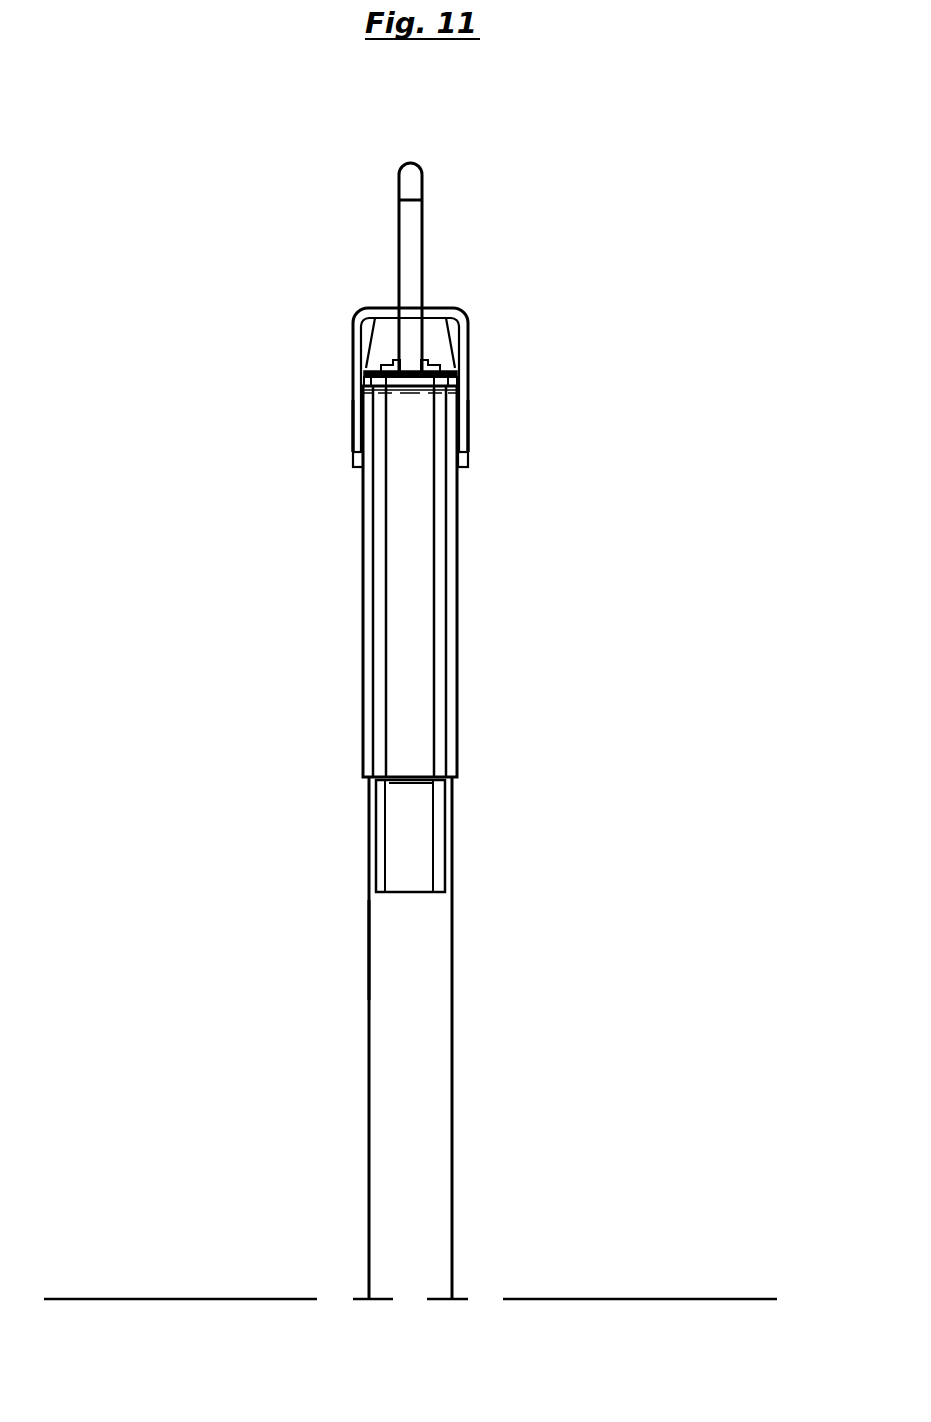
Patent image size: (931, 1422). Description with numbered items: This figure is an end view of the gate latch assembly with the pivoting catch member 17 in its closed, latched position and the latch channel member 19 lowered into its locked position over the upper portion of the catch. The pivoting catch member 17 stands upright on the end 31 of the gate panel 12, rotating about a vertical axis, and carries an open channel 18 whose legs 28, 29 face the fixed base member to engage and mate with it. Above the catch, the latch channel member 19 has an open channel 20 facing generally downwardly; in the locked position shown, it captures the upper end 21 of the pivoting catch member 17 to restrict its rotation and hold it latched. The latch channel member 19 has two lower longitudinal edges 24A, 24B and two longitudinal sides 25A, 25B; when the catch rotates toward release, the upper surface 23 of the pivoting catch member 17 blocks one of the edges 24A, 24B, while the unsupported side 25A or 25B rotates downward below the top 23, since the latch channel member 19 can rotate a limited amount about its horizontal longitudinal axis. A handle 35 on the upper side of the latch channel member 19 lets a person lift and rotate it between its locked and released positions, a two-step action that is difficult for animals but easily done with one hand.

The handle 35 is at (402, 192).
The latch channel member 19 is at (352, 340).
The open channel 20 is at (455, 348).
The upper end 21 is at (373, 408).
The upper surface 23 is at (458, 387).
The longitudinal side 25A is at (468, 437).
The longitudinal side 25B is at (352, 432).
The lower longitudinal edge 24A is at (470, 463).
The lower longitudinal edge 24B is at (353, 460).
The leg 29 is at (372, 553).
The leg 28 is at (455, 558).
The open channel 18 is at (405, 637).
The pivoting catch member 17 is at (365, 728).
The end 31 is at (433, 940).
The gate panel 12 is at (368, 988).